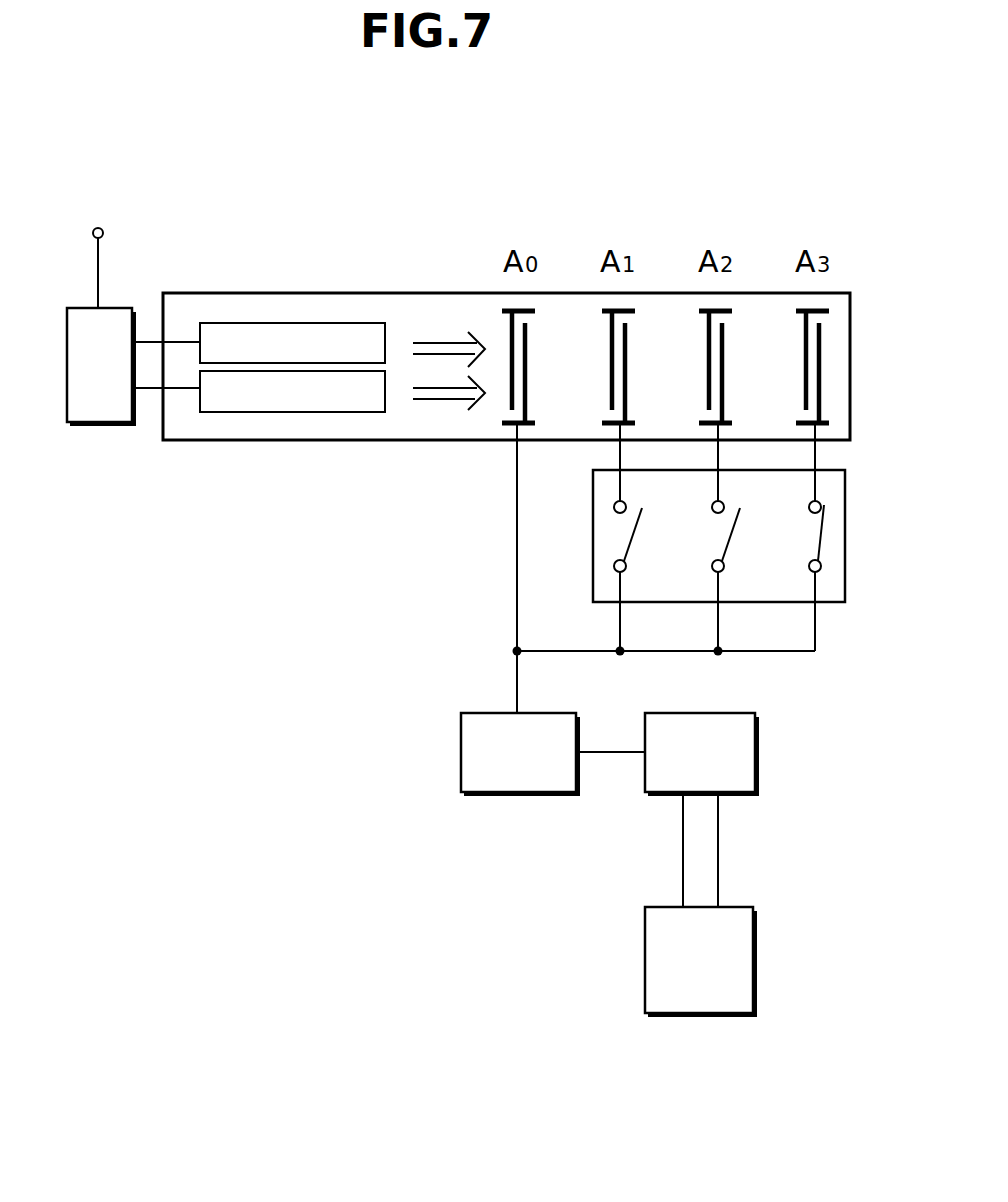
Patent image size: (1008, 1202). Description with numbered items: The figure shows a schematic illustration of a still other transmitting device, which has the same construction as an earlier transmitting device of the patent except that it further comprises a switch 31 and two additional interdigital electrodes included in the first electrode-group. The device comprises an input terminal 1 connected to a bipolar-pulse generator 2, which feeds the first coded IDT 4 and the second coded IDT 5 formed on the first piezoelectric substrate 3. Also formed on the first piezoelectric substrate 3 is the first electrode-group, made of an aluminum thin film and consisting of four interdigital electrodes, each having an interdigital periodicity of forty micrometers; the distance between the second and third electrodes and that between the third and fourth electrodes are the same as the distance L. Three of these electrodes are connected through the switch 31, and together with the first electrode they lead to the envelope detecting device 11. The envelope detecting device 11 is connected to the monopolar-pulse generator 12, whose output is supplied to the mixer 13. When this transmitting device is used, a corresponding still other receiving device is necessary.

The input terminal 1 is at (180, 238).
The bipolar-pulse generator 2 is at (92, 462).
The first piezoelectric substrate 3 is at (393, 430).
The first coded IDT 4 is at (352, 340).
The second coded IDT 5 is at (278, 387).
The envelope detecting device 11 is at (370, 780).
The monopolar-pulse generator 12 is at (583, 852).
The mixer 13 is at (590, 986).
The switch 31 is at (830, 595).